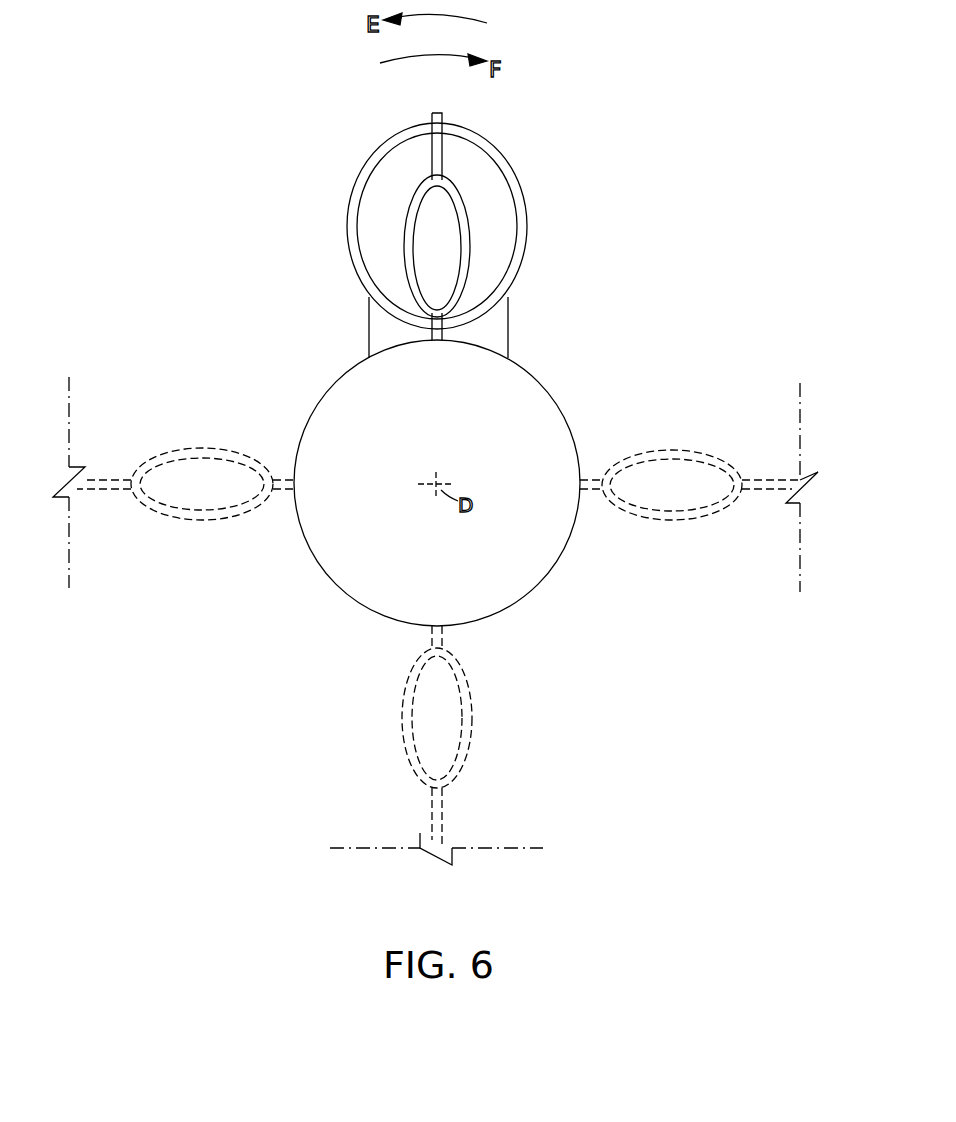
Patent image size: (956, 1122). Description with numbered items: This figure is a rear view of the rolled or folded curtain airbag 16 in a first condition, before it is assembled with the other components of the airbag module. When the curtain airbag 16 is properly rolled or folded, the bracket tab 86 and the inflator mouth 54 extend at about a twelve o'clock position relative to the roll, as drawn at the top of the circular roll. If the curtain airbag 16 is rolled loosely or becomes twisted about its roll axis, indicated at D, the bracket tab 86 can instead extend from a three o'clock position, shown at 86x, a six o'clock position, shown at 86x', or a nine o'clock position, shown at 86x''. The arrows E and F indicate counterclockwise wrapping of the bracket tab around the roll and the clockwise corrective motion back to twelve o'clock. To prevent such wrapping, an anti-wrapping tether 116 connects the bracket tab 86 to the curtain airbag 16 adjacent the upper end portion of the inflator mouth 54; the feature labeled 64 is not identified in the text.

The anti-wrapping tether 116 is at (437, 128).
The inflator mouth 54 is at (515, 175).
The inner ring 64 is at (502, 225).
The bracket tab 86 is at (468, 252).
The curtain airbag 16 is at (547, 392).
The bracket tab at three o'clock position 86x is at (699, 487).
The bracket tab at six o'clock position 86x' is at (441, 745).
The bracket tab at nine o'clock position 86x'' is at (173, 482).